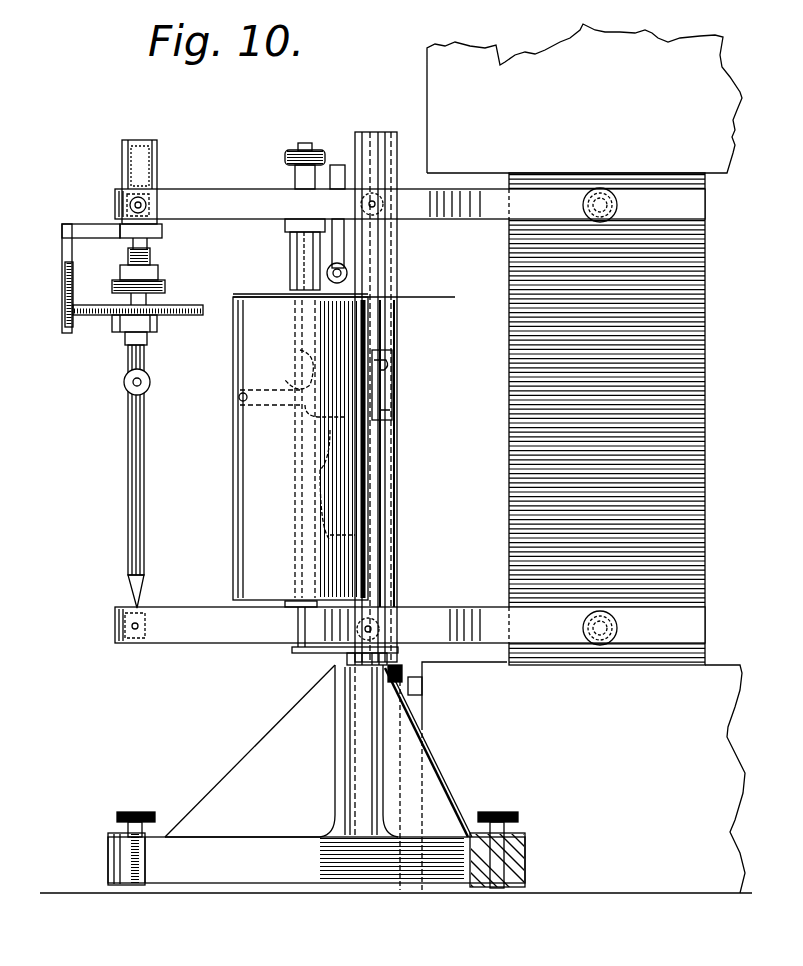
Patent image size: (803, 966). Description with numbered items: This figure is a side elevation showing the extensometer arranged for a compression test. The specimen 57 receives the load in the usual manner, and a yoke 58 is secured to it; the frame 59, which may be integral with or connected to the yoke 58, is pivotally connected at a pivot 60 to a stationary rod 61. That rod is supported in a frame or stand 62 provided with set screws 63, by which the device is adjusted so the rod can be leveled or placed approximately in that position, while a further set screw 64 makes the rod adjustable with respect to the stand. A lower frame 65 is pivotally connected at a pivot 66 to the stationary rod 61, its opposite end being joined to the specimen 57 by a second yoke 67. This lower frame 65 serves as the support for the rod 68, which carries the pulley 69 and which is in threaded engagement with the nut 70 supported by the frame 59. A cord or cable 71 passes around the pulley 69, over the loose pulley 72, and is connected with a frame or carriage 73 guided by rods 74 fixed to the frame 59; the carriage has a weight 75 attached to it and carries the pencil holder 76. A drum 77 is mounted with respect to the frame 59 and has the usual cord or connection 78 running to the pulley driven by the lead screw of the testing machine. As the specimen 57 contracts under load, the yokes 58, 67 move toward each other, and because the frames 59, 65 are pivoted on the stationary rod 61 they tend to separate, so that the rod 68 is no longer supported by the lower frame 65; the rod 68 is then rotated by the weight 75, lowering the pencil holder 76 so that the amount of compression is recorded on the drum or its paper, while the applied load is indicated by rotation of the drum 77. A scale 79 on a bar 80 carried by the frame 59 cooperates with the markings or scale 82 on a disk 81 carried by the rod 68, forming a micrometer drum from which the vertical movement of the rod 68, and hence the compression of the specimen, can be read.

The specimen 57 is at (702, 400).
The yoke 58 is at (553, 188).
The frame 59 is at (410, 205).
The pivot 60 is at (374, 202).
The stationary rod 61 is at (362, 150).
The frame or stand 62 is at (316, 768).
The set screws 63 is at (118, 818).
The set screw 64 is at (400, 690).
The lower frame 65 is at (410, 626).
The pivot 66 is at (371, 626).
The yoke 67 is at (570, 628).
The rod 68 is at (145, 532).
The pulley 69 is at (128, 262).
The nut 70 is at (164, 160).
The cord or cable 71 is at (288, 264).
The loose pulley 72 is at (347, 272).
The frame or carriage 73 is at (387, 372).
The rods 74 is at (395, 482).
The weight 75 is at (385, 510).
The pencil holder 76 is at (273, 405).
The drum 77 is at (246, 525).
The cord or connection 78 is at (346, 311).
The scale 79 is at (80, 283).
The bar 80 is at (62, 250).
The disk 81 is at (185, 300).
The markings or scale 82 is at (110, 318).